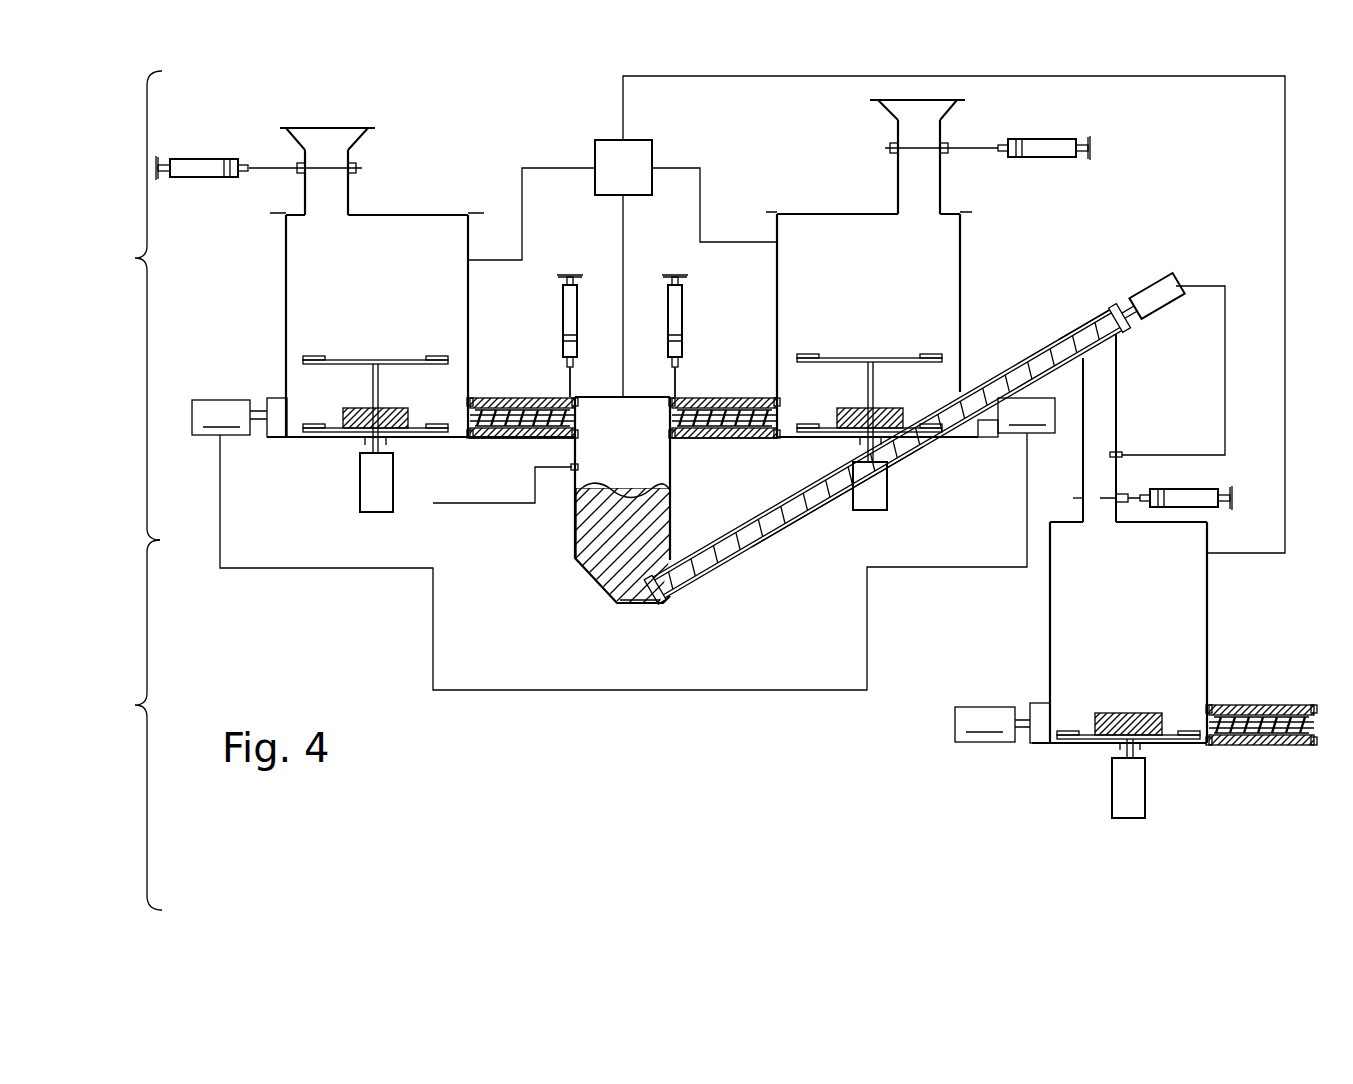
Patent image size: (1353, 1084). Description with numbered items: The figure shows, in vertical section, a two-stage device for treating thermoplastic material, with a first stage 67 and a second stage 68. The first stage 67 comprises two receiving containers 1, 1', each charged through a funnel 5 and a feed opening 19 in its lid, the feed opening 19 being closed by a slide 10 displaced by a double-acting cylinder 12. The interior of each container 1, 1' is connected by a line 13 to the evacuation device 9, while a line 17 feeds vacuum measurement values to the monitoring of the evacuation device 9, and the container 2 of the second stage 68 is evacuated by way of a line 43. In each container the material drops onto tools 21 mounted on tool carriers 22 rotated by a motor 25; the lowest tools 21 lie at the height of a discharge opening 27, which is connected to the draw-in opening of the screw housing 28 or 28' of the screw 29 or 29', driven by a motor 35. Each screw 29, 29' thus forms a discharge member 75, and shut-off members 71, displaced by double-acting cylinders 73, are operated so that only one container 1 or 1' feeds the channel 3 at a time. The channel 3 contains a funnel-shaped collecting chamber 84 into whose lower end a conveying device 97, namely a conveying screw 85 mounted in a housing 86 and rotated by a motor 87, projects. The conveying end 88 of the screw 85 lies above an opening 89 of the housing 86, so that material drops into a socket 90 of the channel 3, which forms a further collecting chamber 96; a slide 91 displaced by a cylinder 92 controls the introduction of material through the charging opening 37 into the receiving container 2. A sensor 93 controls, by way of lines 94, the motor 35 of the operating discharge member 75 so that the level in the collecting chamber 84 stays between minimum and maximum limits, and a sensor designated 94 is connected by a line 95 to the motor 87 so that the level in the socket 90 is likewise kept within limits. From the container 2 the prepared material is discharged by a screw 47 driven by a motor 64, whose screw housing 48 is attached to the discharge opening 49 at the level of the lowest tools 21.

The receiving container 1 is at (393, 325).
The receiving container 1' is at (849, 324).
The receiving container 2 is at (1000, 655).
The channel 3 is at (541, 580).
The funnel 5 is at (325, 135).
The evacuation device 9 is at (623, 268).
The slide 10 is at (330, 165).
The double-acting cylinder 12 is at (200, 160).
The line 13 is at (701, 205).
The line 17 is at (593, 172).
The feed opening 19 is at (330, 215).
The tools 21 is at (320, 357).
The tool carrier 22 is at (365, 360).
The motor 25 is at (375, 485).
The discharge opening 27 is at (350, 430).
The screw housing 28 is at (522, 387).
The screw housing 28' is at (724, 387).
The screw 29 is at (522, 381).
The screw 29' is at (726, 381).
The motor 35 is at (623, 417).
The charging opening 37 is at (1104, 522).
The line 43 is at (1283, 158).
The screw 47 is at (1222, 737).
The screw housing 48 is at (1275, 737).
The discharge opening 49 is at (1155, 737).
The motor 64 is at (1002, 723).
The first stage 67 is at (130, 305).
The second stage 68 is at (130, 725).
The shut-off member 71 is at (573, 390).
The double-acting cylinder 73 is at (575, 315).
The discharge member 75 is at (502, 458).
The collecting chamber 84 is at (580, 515).
The conveying screw 85 is at (725, 550).
The housing 86 is at (695, 590).
The motor 87 is at (1148, 300).
The conveying end 88 is at (1097, 330).
The opening 89 is at (1090, 355).
The socket 90 is at (1118, 418).
The slide 91 is at (1133, 497).
The cylinder 92 is at (1222, 488).
The sensor 93 is at (580, 468).
The lines 94 is at (1125, 453).
The line 95 is at (1223, 338).
The collecting chamber 96 is at (1100, 477).
The conveying device 97 is at (805, 547).